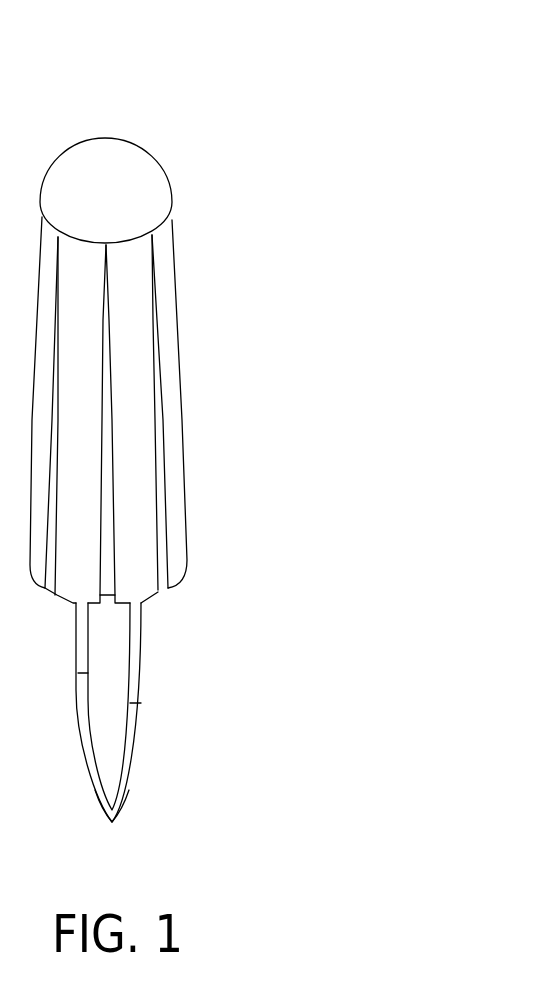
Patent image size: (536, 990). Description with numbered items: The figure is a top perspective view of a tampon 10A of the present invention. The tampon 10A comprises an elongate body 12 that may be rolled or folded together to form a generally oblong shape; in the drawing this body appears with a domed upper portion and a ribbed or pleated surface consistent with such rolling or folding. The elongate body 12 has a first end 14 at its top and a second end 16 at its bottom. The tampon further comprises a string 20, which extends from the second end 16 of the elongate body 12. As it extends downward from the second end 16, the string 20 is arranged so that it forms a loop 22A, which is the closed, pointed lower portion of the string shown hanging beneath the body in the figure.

The tampon 10A is at (155, 106).
The elongate body 12 is at (130, 380).
The first end 14 is at (127, 200).
The second end 16 is at (143, 600).
The string 20 is at (133, 668).
The loop 22A is at (177, 757).